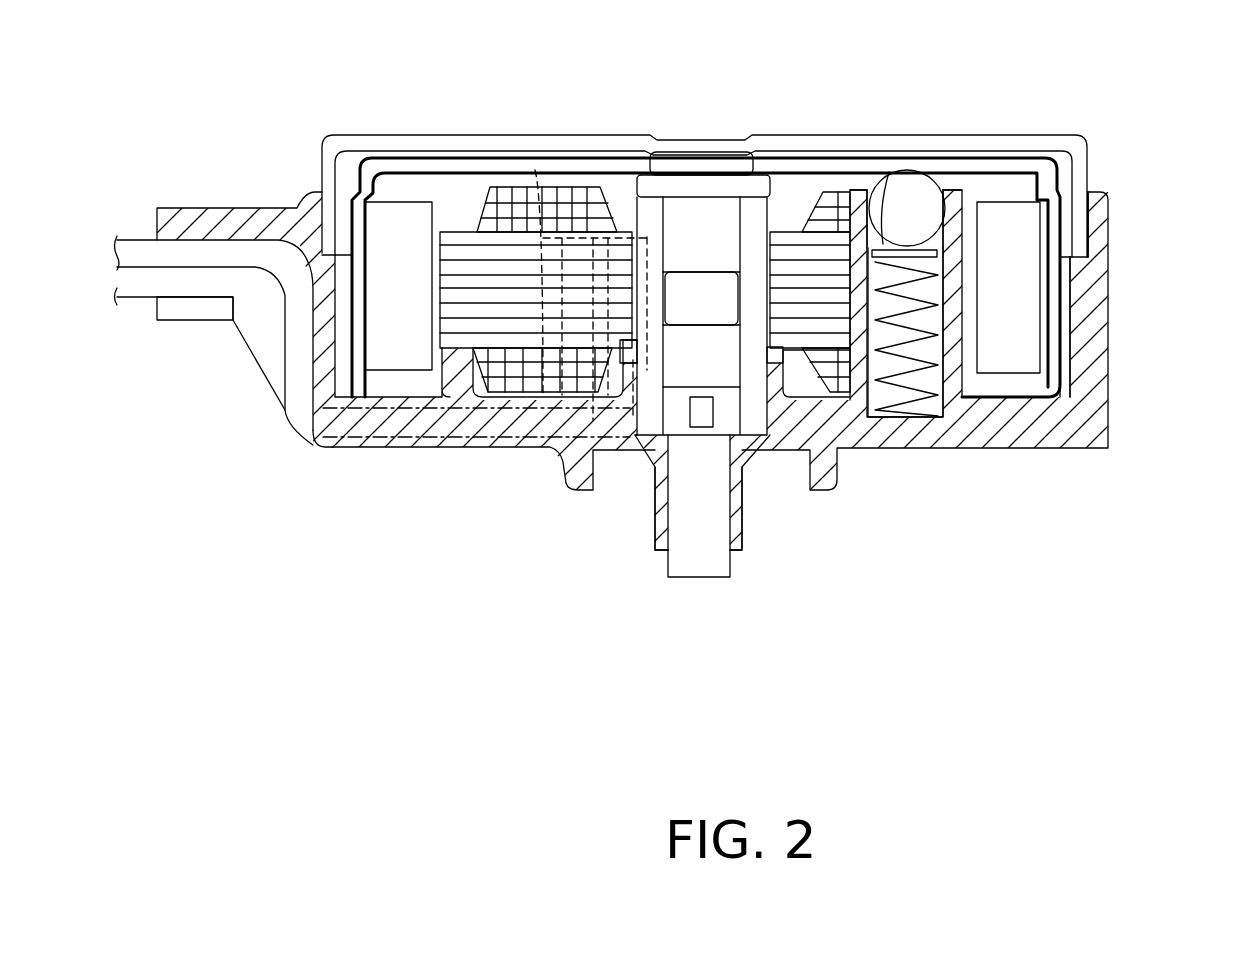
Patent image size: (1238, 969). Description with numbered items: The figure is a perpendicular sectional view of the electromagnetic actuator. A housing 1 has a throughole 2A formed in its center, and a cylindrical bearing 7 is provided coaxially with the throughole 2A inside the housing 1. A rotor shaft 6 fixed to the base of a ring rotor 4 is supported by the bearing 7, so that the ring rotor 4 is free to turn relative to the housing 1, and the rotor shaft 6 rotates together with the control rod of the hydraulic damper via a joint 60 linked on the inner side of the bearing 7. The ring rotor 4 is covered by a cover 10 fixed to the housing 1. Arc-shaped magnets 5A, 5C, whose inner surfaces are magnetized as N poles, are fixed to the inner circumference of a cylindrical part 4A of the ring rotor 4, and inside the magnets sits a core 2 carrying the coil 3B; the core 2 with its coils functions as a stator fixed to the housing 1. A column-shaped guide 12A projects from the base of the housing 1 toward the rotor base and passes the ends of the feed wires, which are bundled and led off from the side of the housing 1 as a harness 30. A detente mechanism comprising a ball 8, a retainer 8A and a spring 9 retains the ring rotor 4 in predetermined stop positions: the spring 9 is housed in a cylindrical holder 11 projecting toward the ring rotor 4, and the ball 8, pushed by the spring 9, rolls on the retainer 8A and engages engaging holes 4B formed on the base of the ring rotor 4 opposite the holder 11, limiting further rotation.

The housing 1 is at (1102, 278).
The core 2 is at (473, 320).
The throughole 2A is at (657, 533).
The coil 3B is at (517, 210).
The ring rotor 4 is at (983, 163).
The cylindrical part 4A is at (1058, 310).
The engaging holes 4B is at (895, 165).
The magnet 5A is at (1030, 350).
The magnet 5C is at (393, 355).
The rotor shaft 6 is at (680, 210).
The bearing 7 is at (637, 385).
The ball 8 is at (925, 190).
The retainer 8A is at (877, 187).
The spring 9 is at (920, 420).
The cover 10 is at (1043, 143).
The holder 11 is at (963, 267).
The guide 12A is at (535, 170).
The harness 30 is at (132, 237).
The joint 60 is at (723, 560).